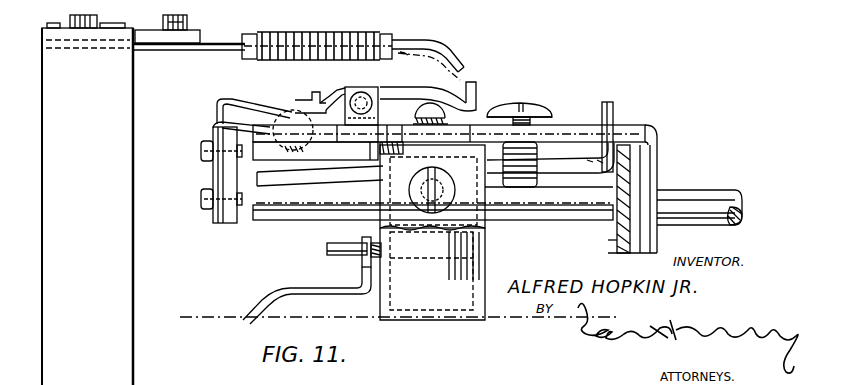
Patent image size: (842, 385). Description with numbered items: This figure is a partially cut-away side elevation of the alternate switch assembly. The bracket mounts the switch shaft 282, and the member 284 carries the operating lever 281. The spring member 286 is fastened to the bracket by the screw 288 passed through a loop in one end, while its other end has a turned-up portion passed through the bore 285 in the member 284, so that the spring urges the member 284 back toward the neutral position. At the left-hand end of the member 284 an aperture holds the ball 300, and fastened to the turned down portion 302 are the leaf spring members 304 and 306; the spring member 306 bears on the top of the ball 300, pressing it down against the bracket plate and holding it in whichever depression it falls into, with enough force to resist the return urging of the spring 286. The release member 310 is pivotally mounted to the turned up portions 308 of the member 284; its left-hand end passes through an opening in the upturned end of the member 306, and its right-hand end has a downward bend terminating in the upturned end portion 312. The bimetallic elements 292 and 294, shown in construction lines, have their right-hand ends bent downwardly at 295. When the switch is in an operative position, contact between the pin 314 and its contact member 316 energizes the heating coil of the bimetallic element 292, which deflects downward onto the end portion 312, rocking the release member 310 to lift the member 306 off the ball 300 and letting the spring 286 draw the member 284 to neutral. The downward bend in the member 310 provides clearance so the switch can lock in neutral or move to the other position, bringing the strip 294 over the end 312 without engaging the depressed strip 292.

The operating lever 281 is at (690, 190).
The switch shaft 282 is at (410, 265).
The member 284 is at (566, 125).
The bore 285 is at (616, 128).
The spring member 286 is at (306, 178).
The screw 288 is at (410, 190).
The bimetallic element 292 is at (442, 55).
The bimetallic element 294 is at (406, 40).
The downwardly bent end 295 is at (462, 66).
The ball 300 is at (214, 125).
The turned down portion 302 is at (214, 180).
The leaf spring member 304 is at (232, 100).
The leaf spring member 306 is at (290, 106).
The turned up portions 308 is at (374, 92).
The release member 310 is at (430, 94).
The upturned end portion 312 is at (478, 98).
The pin 314 is at (327, 246).
The contact member 316 is at (310, 285).